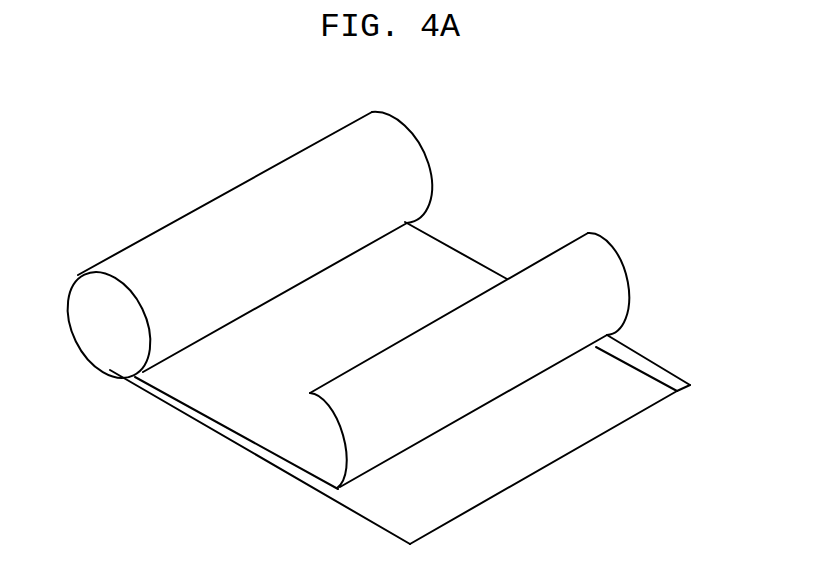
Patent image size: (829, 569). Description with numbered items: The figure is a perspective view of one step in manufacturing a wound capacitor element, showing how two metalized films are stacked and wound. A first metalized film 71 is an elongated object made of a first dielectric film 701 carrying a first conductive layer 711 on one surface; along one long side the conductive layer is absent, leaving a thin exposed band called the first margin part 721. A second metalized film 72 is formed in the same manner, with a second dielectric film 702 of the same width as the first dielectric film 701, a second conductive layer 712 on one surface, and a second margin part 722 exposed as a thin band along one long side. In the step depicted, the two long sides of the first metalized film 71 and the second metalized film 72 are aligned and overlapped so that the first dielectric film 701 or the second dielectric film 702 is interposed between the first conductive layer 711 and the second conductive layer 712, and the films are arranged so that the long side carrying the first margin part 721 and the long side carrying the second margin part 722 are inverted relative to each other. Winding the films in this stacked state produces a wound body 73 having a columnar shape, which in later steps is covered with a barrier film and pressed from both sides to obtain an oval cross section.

The first metalized film 71 is at (432, 425).
The first conductive layer 711 is at (492, 475).
The second conductive layer 712 is at (433, 277).
The second metalized film 72 is at (479, 341).
The first dielectric film 701 is at (648, 357).
The second dielectric film 702 is at (368, 382).
The first margin part 721 is at (678, 382).
The second margin part 722 is at (218, 435).
The wound body 73 is at (392, 143).